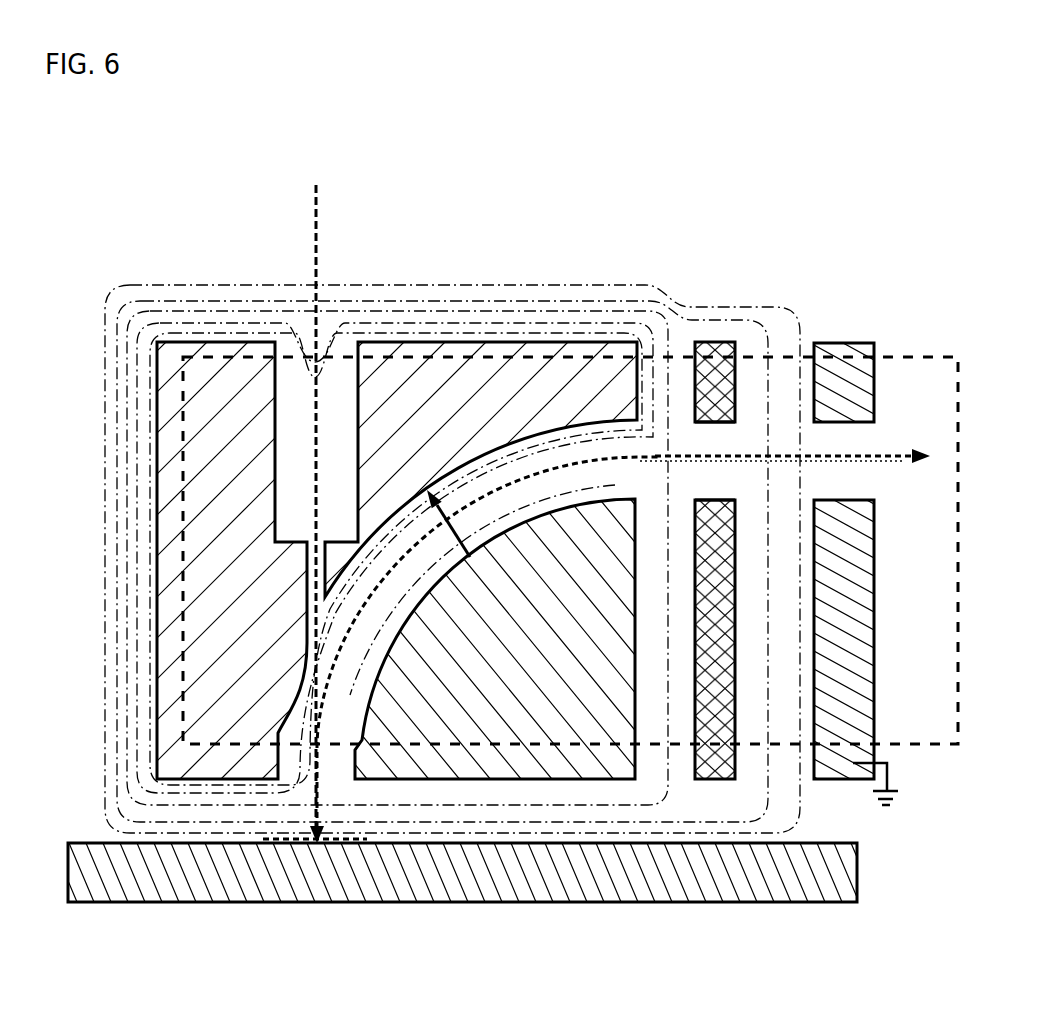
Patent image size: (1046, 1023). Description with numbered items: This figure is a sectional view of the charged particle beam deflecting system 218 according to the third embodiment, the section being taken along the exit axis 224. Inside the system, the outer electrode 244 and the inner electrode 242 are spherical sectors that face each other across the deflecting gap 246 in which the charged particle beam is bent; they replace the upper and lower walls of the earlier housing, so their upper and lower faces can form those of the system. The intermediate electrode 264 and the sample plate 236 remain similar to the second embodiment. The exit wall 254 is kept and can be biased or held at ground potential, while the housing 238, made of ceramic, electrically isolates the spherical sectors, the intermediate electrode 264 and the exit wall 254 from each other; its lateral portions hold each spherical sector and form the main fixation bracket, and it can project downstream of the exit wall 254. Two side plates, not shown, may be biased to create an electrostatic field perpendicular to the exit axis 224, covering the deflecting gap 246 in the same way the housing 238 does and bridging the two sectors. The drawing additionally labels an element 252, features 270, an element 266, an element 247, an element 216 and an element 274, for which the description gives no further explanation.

The charged particle beam deflecting system 218 is at (130, 214).
The incoming ion beam axis 252 is at (333, 377).
The equipotential lines 270 is at (448, 300).
The intermediate electrode 264 is at (720, 352).
The aperture 266 is at (733, 451).
The exit wall 254 is at (830, 347).
The housing 238 is at (918, 355).
The outer electrode 244 is at (230, 483).
The inner electrode 242 is at (519, 715).
The deflecting gap 246 is at (540, 493).
The deflected ion path 247 is at (663, 490).
The exit ion beam 216 is at (895, 452).
The exit axis 224 is at (900, 465).
The grounded electrode 274 is at (860, 490).
The sample plate 236 is at (512, 873).